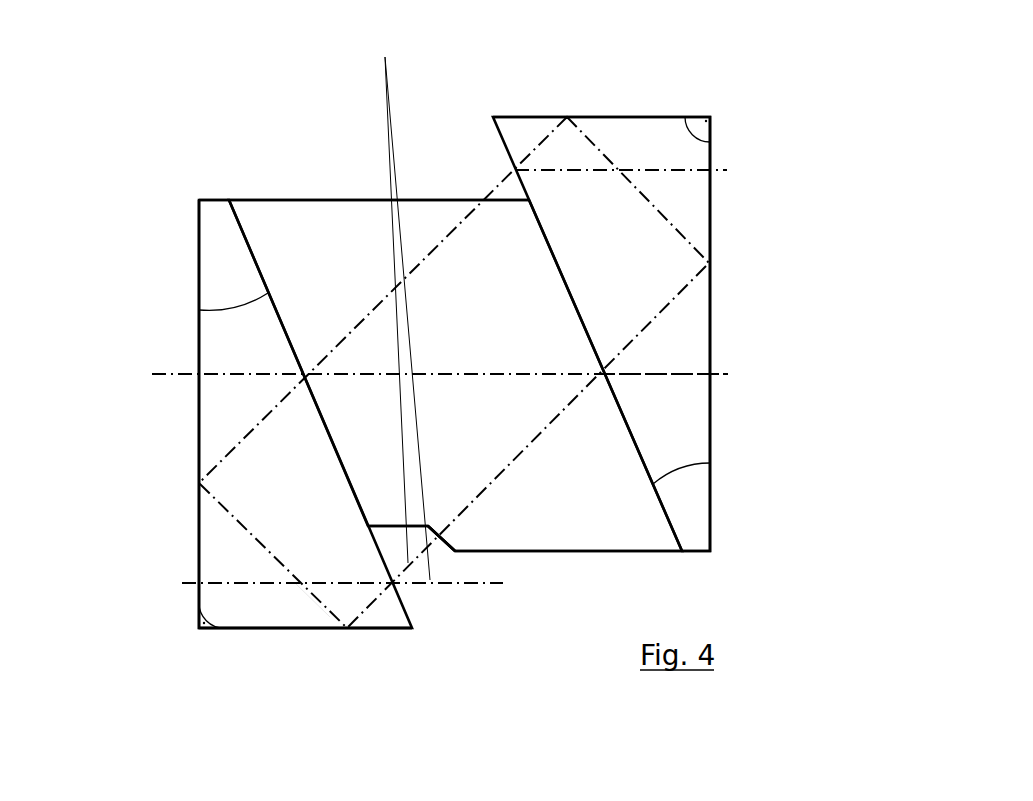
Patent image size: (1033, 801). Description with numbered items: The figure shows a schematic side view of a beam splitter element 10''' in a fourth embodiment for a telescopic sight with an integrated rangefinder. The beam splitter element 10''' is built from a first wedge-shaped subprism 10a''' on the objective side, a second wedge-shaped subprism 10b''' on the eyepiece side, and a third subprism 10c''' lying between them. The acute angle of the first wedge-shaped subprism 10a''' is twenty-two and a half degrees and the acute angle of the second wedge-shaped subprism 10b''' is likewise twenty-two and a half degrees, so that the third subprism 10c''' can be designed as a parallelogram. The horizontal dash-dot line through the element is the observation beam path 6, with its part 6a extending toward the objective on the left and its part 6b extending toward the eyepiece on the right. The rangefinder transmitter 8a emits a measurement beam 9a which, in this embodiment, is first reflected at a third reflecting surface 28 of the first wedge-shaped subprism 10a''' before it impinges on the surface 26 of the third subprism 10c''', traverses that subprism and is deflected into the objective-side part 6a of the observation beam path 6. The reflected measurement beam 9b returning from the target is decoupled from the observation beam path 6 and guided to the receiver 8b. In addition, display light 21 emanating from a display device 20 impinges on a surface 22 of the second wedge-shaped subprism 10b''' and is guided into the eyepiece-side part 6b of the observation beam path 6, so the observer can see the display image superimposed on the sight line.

The beam splitter element 10''' is at (533, 318).
The first wedge-shaped subprism 10a''' is at (220, 414).
The second wedge-shaped subprism 10b''' is at (689, 334).
The third subprism 10c''' is at (455, 280).
The observation beam path 6 is at (182, 375).
The part of the observation beam path extending toward the objective 6a is at (140, 385).
The part of the observation beam path extending toward the eyepiece 6b is at (738, 364).
The transmitter 8a is at (539, 597).
The receiver 8b is at (179, 597).
The measurement beam 9a is at (385, 57).
The reflected measurement beam 9b is at (313, 597).
The display device 20 is at (765, 186).
The display light 21 is at (660, 215).
The surface of the second wedge-shaped subprism 22 is at (711, 148).
The surface of the third subprism 26 is at (450, 547).
The third reflecting surface 28 is at (415, 615).